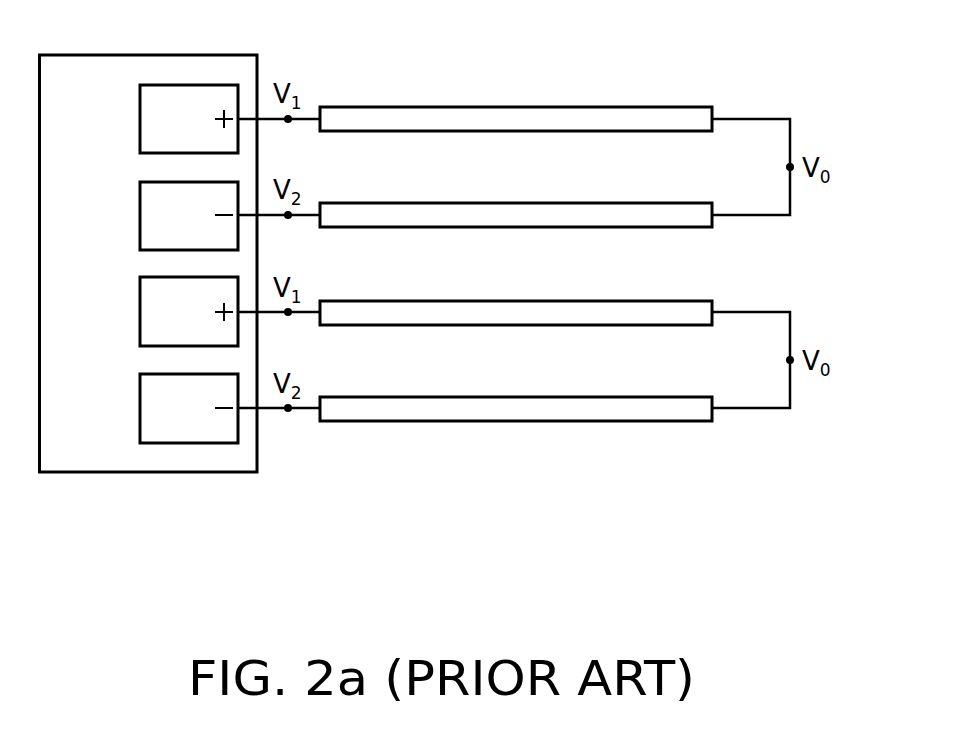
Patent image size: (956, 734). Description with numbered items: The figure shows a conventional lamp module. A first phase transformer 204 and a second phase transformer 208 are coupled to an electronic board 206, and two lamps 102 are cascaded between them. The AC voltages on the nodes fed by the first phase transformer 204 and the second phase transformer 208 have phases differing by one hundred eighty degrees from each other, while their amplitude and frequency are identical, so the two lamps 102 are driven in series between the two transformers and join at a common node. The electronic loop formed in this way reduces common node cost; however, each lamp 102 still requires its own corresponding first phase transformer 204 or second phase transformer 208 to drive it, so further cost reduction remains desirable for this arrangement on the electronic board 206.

The lamp 102 is at (513, 106).
The first phase transformer 204 is at (201, 133).
The electronic board 206 is at (110, 277).
The second phase transformer 208 is at (201, 229).